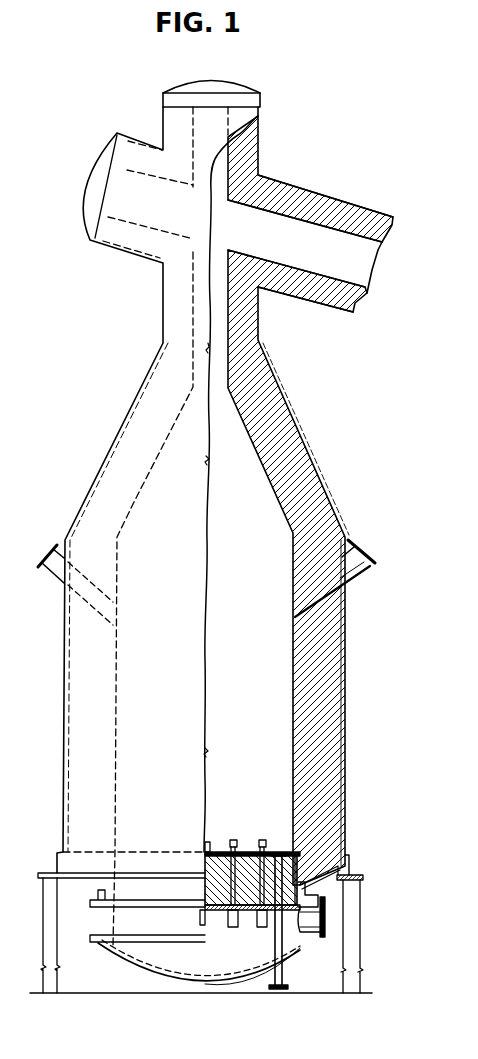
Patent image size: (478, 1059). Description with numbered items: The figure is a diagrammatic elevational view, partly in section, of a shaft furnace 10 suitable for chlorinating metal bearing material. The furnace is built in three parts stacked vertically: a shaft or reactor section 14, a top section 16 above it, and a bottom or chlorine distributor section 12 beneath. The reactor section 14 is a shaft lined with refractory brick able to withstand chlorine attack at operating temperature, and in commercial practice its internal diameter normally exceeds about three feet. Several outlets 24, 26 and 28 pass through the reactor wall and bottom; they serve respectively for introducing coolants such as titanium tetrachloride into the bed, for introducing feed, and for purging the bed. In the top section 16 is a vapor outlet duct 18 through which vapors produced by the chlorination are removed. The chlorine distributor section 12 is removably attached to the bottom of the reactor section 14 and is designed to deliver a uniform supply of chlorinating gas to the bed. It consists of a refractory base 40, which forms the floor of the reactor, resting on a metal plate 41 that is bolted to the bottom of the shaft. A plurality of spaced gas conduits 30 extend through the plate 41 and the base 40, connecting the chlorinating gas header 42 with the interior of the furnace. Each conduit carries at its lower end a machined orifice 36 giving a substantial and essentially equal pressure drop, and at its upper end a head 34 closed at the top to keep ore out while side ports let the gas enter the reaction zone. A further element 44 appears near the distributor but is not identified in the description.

The furnace vessel 10 is at (345, 672).
The chlorine distributor section 12 is at (294, 952).
The reactor section 14 is at (245, 484).
The top section 16 is at (186, 513).
The vapor outlet duct 18 is at (310, 243).
The outlet 24 is at (353, 546).
The outlet 26 is at (40, 557).
The outlet 28 is at (273, 989).
The gas conduit 30 is at (243, 845).
The head 34 is at (263, 843).
The orifice 36 is at (240, 930).
The refractory base 40 is at (218, 847).
The metal plate 41 is at (204, 918).
The chlorinating gas header 42 is at (262, 930).
The drain outlet 44 is at (315, 912).